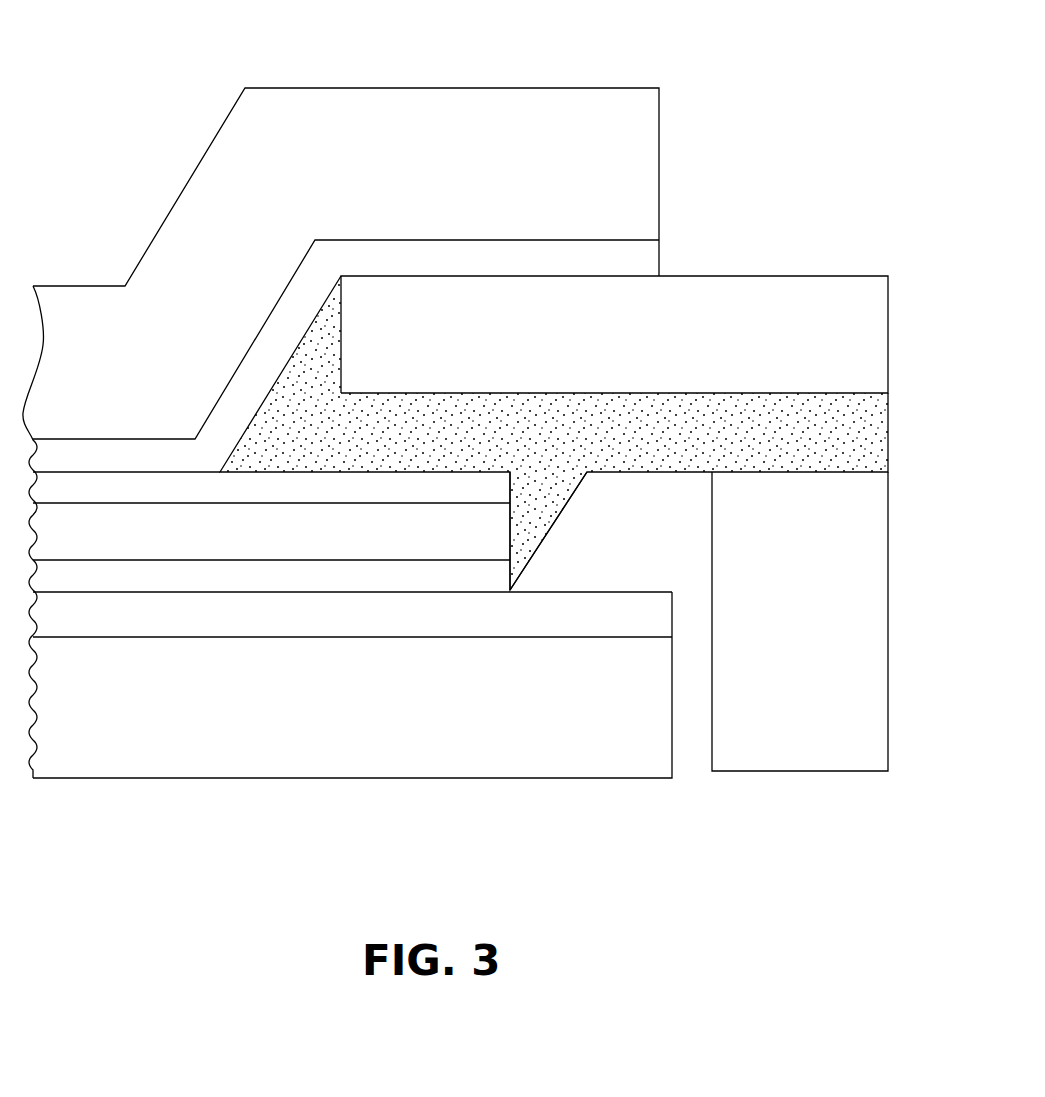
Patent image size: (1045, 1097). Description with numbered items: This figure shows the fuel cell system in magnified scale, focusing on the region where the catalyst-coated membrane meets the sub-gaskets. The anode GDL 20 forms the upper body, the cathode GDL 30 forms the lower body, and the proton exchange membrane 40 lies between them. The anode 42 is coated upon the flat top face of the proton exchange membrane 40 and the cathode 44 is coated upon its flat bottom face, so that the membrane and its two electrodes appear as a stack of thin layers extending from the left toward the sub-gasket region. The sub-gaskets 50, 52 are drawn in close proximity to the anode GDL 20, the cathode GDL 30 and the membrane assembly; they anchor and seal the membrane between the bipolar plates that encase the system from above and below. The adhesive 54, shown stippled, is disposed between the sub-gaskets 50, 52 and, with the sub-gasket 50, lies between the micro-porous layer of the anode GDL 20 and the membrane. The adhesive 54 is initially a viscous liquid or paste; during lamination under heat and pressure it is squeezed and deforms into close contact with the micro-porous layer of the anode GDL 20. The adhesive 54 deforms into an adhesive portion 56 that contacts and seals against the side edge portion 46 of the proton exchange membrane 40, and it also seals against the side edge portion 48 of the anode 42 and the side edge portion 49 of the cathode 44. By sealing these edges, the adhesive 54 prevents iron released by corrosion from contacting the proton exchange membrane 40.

The anode GDL 20 is at (468, 122).
The sub-gasket 50 is at (795, 308).
The adhesive 54 is at (862, 440).
The sub-gasket 52 is at (818, 737).
The anode 42 is at (93, 488).
The proton exchange membrane 40 is at (143, 537).
The cathode 44 is at (200, 580).
The cathode GDL 30 is at (283, 740).
The side edge portion of the anode 48 is at (495, 490).
The side edge portion of the proton exchange membrane 46 is at (500, 535).
The side edge portion of the cathode 49 is at (498, 578).
The adhesive portion 56 is at (533, 502).